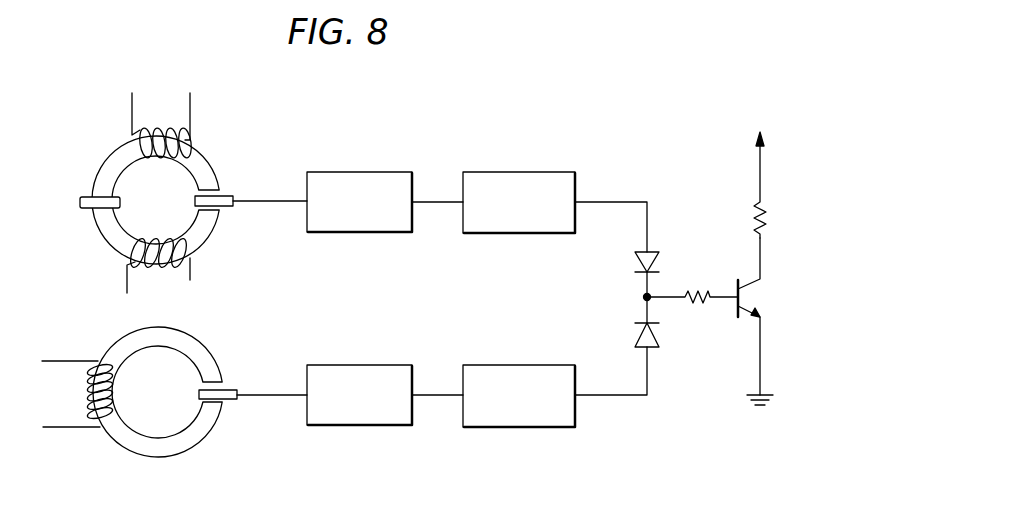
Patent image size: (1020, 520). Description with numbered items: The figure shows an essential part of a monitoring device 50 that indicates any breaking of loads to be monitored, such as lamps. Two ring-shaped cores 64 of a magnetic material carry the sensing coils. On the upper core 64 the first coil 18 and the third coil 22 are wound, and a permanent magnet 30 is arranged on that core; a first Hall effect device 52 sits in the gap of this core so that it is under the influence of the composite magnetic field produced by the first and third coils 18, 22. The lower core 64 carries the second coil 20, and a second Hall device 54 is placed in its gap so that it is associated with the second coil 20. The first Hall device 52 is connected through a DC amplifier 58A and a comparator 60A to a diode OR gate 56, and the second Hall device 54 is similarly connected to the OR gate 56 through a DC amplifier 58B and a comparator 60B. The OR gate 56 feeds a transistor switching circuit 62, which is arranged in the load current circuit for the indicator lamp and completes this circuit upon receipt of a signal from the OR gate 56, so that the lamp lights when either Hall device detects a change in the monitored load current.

The first coil 18 is at (180, 135).
The second coil 20 is at (112, 410).
The third coil 22 is at (183, 265).
The permanent magnet 30 is at (88, 208).
The monitoring device 50 is at (715, 251).
The first Hall effect device 52 is at (227, 207).
The second Hall device 54 is at (228, 392).
The diode OR gate 56 is at (635, 282).
The DC amplifier 58A is at (355, 172).
The DC amplifier 58B is at (352, 365).
The comparator 60A is at (522, 172).
The comparator 60B is at (508, 365).
The transistor switching circuit 62 is at (772, 279).
The cores 64 is at (112, 157).